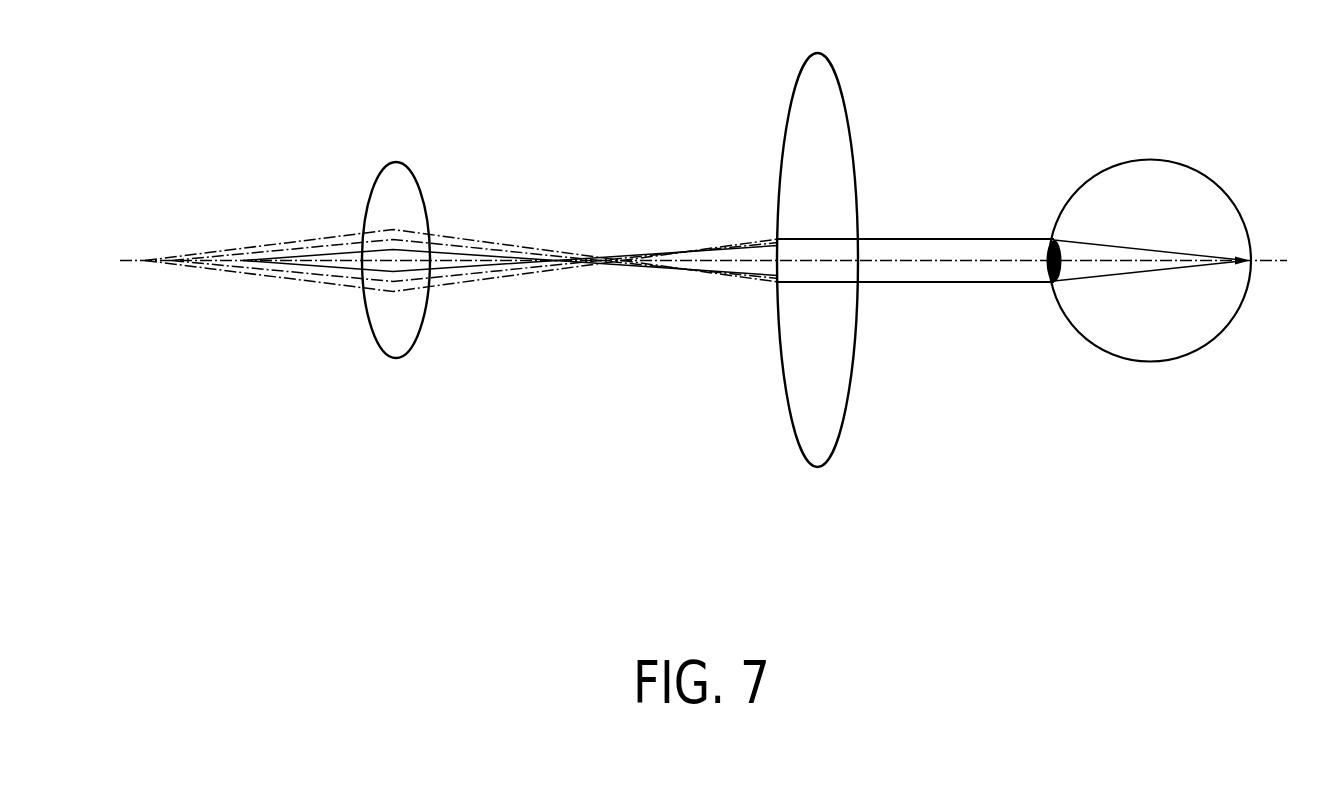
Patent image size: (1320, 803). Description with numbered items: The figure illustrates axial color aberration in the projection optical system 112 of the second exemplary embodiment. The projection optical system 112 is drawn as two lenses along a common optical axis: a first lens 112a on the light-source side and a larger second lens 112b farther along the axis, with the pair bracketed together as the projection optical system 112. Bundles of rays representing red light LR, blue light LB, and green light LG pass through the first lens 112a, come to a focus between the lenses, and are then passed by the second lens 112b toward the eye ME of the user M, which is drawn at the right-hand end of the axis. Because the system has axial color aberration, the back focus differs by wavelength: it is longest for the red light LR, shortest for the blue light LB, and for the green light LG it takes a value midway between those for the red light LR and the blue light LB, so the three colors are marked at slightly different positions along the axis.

The projection optical system 112 is at (745, 513).
The first lens 112a is at (393, 341).
The second lens 112b is at (808, 416).
The red light LR is at (437, 292).
The blue light LB is at (471, 290).
The green light LG is at (512, 295).
The eye of the user ME is at (1140, 185).
The user M is at (1149, 199).